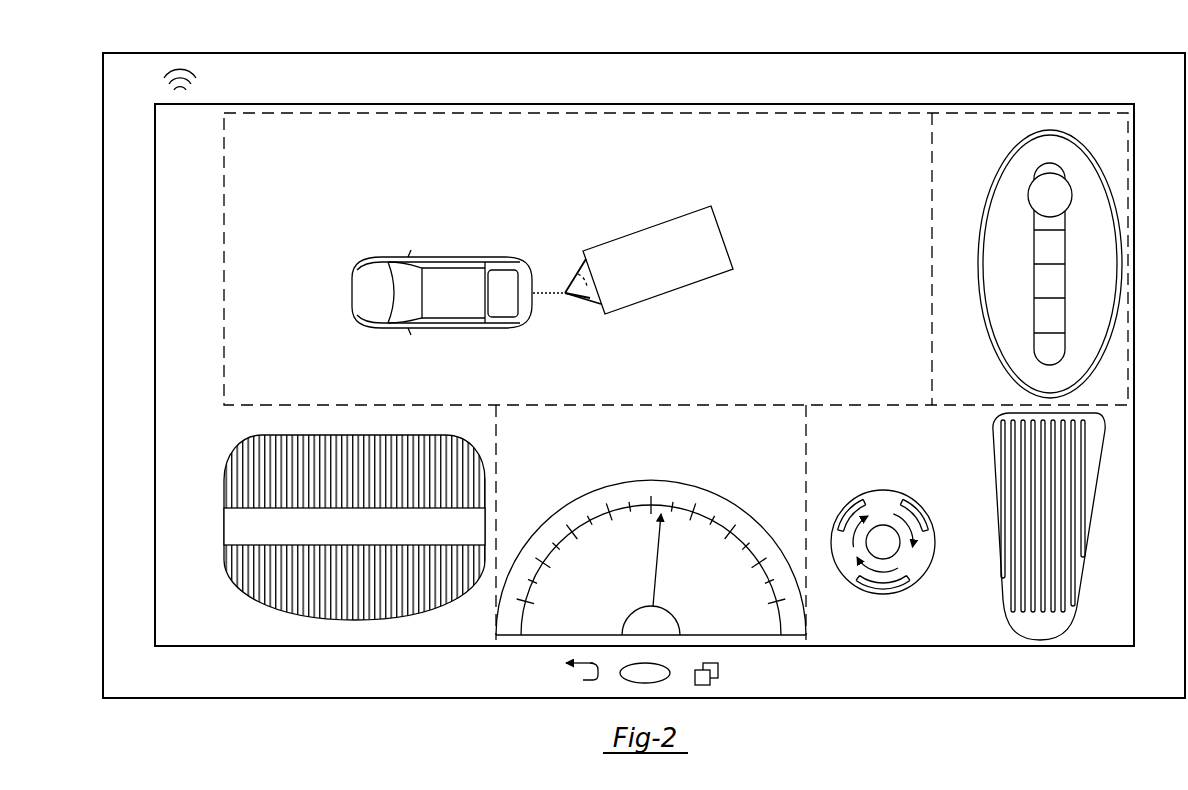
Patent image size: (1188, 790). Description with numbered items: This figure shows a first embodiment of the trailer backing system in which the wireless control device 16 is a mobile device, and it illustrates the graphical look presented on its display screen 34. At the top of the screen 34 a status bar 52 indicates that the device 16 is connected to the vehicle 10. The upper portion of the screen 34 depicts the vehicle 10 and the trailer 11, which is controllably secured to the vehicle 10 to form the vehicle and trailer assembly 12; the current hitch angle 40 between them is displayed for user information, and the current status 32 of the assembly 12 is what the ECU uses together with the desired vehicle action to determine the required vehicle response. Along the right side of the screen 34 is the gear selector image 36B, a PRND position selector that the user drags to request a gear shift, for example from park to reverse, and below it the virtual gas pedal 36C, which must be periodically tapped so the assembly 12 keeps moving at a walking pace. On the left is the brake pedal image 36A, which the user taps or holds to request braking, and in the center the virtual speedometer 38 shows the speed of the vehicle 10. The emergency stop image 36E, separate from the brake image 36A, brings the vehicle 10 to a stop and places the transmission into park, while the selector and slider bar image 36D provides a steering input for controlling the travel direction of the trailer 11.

The vehicle 10 is at (392, 258).
The trailer 11 is at (645, 226).
The vehicle and trailer assembly 12 is at (531, 250).
The wireless control device 16 is at (254, 718).
The current status 32 is at (607, 326).
The display screen 34 is at (412, 690).
The brake pedal image 36A is at (228, 524).
The gear selector image 36B is at (997, 316).
The virtual gas pedal 36C is at (1010, 608).
The selector and slider bar image 36D is at (880, 700).
The emergency stop image 36E is at (883, 497).
The virtual speedometer 38 is at (690, 484).
The current hitch angle 40 is at (590, 301).
The status bar 52 is at (249, 63).